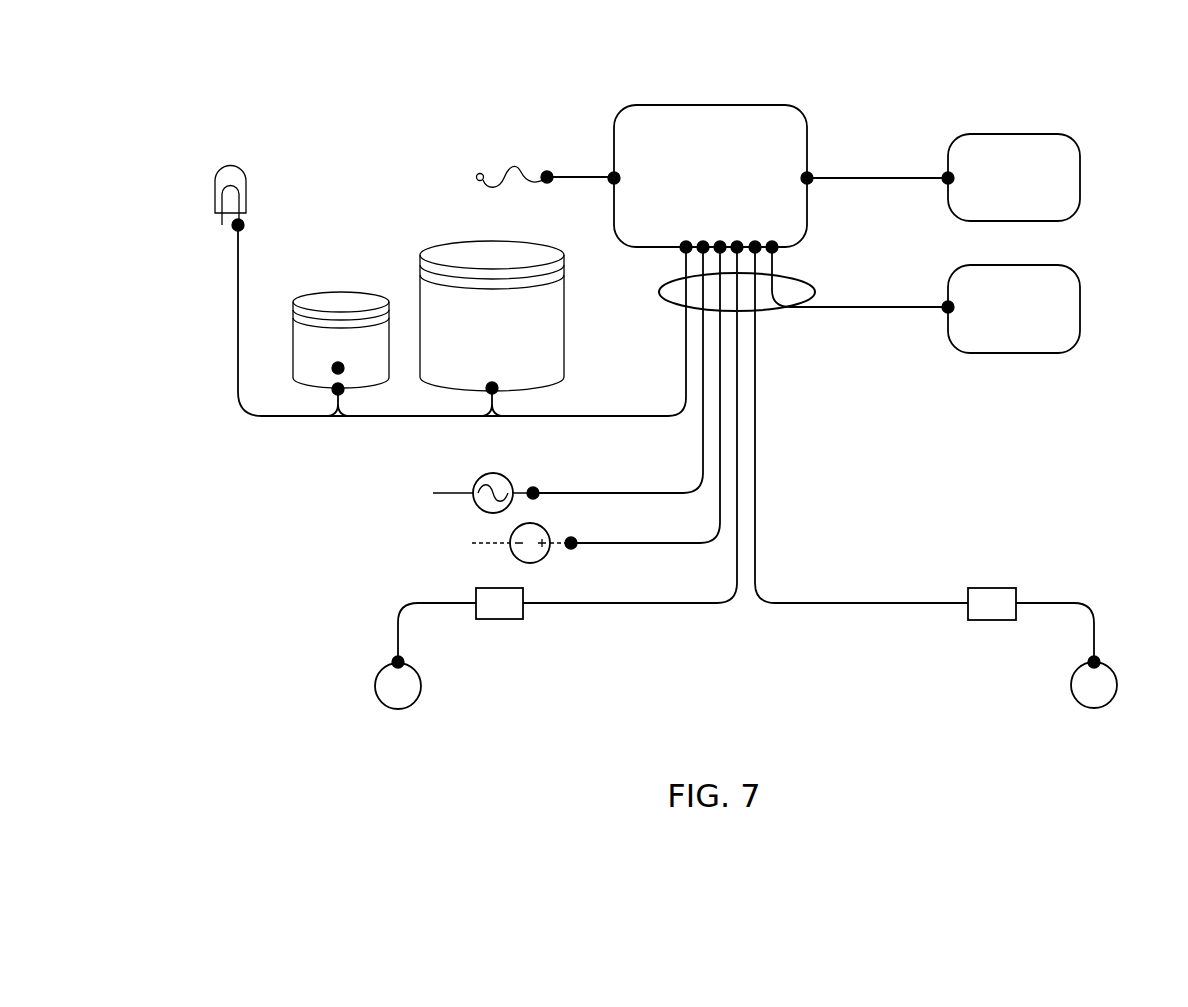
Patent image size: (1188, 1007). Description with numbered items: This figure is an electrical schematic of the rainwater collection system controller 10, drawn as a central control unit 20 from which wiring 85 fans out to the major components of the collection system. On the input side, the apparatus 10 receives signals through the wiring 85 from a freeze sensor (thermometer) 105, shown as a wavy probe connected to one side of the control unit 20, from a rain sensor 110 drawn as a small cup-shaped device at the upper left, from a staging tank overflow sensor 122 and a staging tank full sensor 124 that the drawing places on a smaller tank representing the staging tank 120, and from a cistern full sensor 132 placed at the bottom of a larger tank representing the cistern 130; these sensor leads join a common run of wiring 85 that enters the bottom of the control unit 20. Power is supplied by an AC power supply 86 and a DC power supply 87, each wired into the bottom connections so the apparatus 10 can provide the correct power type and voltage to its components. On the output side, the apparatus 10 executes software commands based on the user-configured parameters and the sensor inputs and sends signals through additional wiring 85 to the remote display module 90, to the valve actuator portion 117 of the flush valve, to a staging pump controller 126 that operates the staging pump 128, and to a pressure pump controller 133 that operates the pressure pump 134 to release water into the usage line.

The rainwater collection system controller 10 is at (878, 112).
The controller 20 is at (752, 104).
The wiring 85 is at (776, 307).
The AC power supply 86 is at (465, 500).
The DC power supply 87 is at (497, 550).
The remote display module 90 is at (1070, 136).
The freeze sensor (thermometer) 105 is at (512, 170).
The rain sensor 110 is at (228, 165).
The valve actuator portion 117 is at (1082, 296).
The reservoir 120 is at (338, 300).
The staging tank overflow sensor 122 is at (335, 369).
The staging tank full sensor 124 is at (335, 391).
The staging pump controller 126 is at (507, 604).
The staging pump 128 is at (383, 688).
The tank 130 is at (458, 243).
The cistern full sensor 132 is at (497, 386).
The pressure pump controller 133 is at (975, 614).
The pressure pump 134 is at (1102, 687).